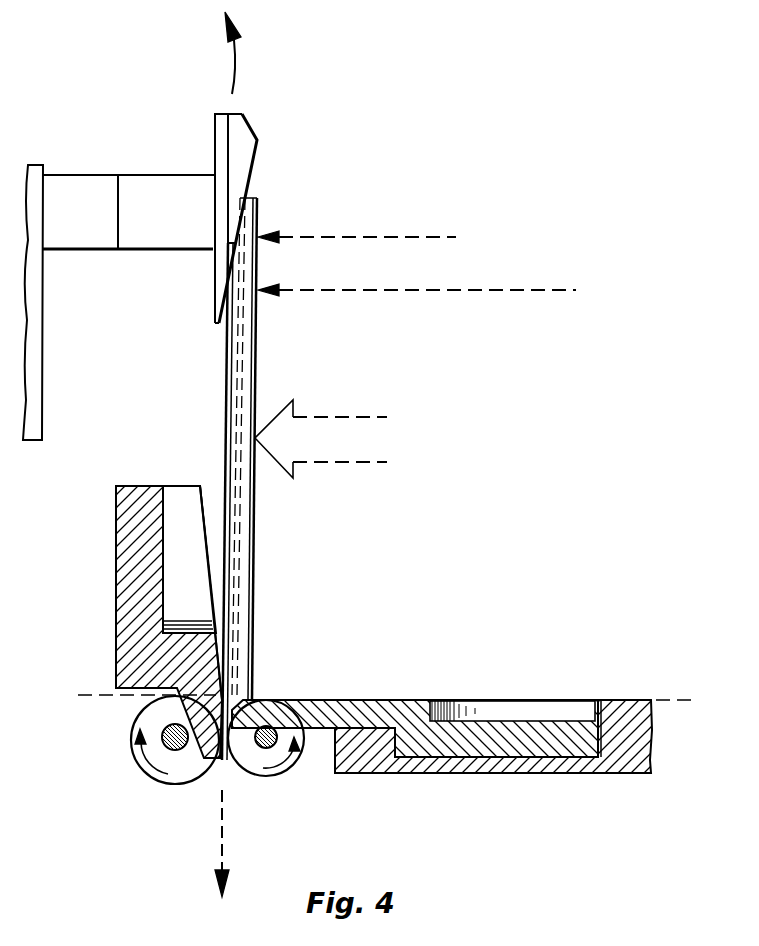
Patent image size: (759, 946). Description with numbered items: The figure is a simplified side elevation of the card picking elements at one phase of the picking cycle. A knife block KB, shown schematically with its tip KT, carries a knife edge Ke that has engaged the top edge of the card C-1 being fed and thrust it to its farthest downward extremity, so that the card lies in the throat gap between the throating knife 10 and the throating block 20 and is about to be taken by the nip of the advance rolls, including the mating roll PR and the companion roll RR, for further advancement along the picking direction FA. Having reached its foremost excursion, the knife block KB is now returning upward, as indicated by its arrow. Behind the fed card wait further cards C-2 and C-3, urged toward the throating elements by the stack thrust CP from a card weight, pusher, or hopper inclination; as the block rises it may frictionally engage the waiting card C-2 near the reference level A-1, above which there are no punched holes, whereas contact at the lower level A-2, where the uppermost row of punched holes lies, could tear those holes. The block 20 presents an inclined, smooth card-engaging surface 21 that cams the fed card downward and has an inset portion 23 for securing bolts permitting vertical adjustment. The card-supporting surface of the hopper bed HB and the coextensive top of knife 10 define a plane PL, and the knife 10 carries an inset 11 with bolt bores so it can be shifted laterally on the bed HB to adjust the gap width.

The knife block KB is at (217, 148).
The knife tip KT is at (240, 116).
The knife edge Ke is at (228, 243).
The card C-1 is at (228, 345).
The waiting card C-2 is at (242, 362).
The waiting card C-3 is at (257, 335).
The reference level A-1 is at (373, 239).
The level of uppermost punched-hole row A-2 is at (435, 292).
The card stack thrust CP is at (350, 417).
The throating block 20 is at (116, 545).
The card-engaging surface 21 is at (208, 493).
The inset portion 23 is at (165, 565).
The plane line PL is at (82, 694).
The throating knife 10 is at (383, 700).
The inset 11 is at (515, 720).
The hopper bed HB is at (634, 768).
The mating advance roll PR is at (146, 773).
The return roller RR is at (290, 770).
The picking direction FA is at (224, 822).